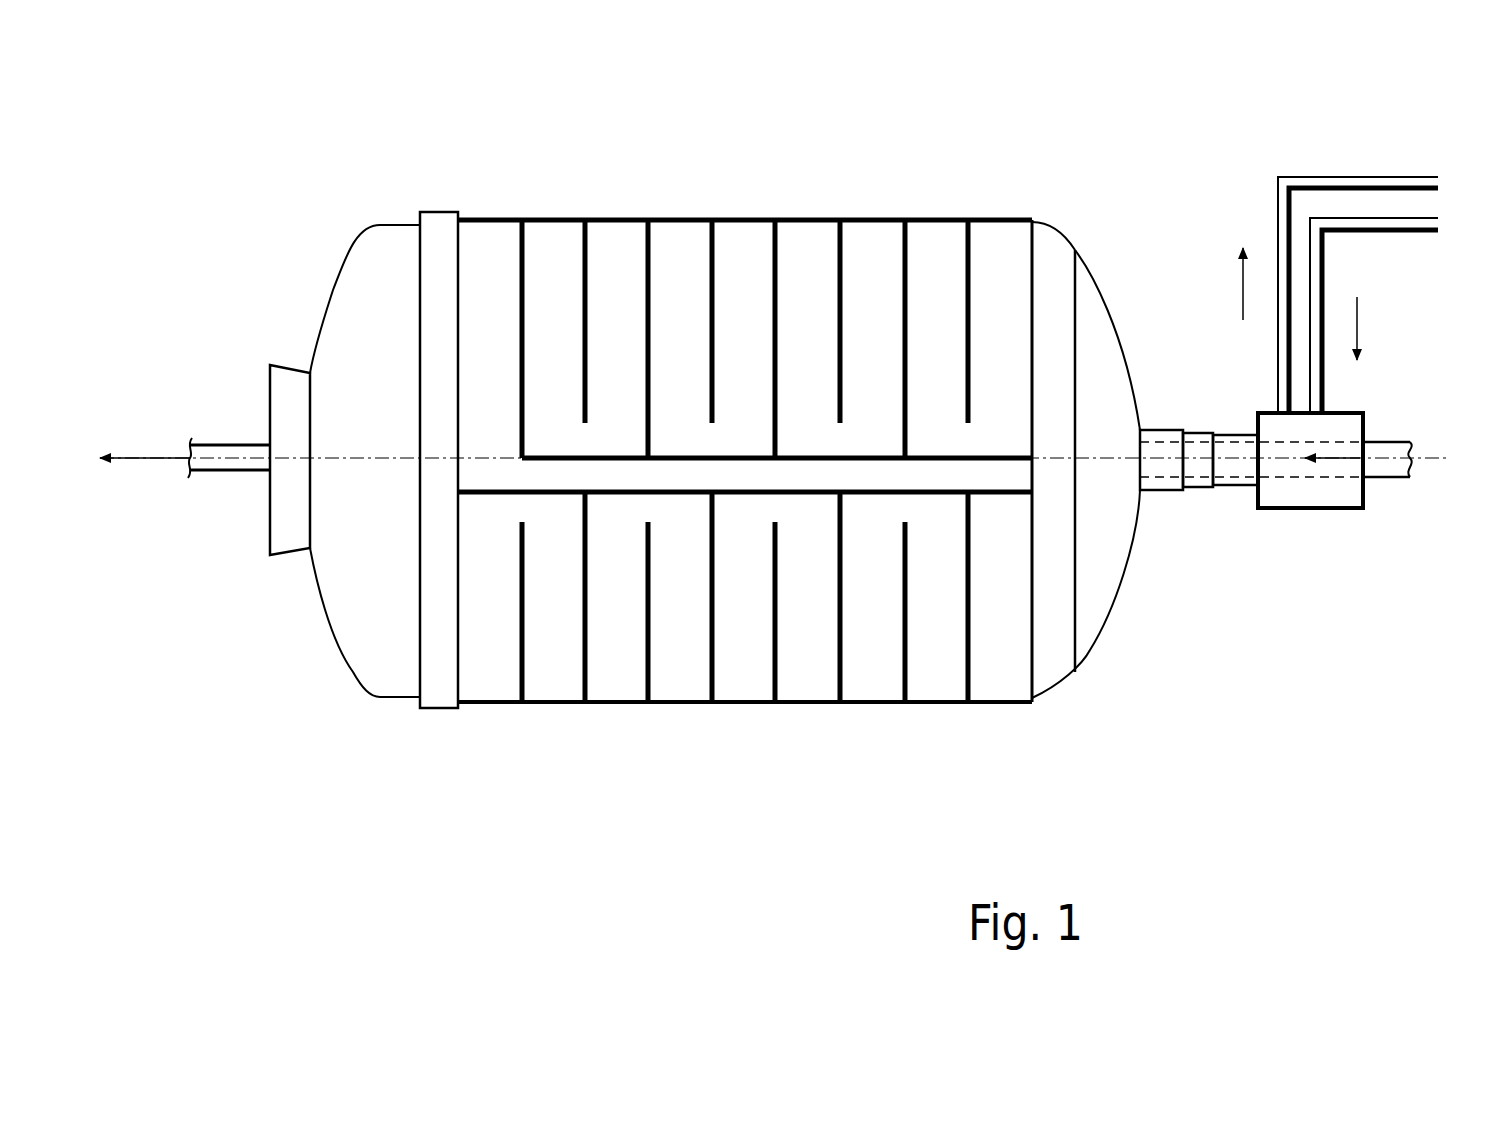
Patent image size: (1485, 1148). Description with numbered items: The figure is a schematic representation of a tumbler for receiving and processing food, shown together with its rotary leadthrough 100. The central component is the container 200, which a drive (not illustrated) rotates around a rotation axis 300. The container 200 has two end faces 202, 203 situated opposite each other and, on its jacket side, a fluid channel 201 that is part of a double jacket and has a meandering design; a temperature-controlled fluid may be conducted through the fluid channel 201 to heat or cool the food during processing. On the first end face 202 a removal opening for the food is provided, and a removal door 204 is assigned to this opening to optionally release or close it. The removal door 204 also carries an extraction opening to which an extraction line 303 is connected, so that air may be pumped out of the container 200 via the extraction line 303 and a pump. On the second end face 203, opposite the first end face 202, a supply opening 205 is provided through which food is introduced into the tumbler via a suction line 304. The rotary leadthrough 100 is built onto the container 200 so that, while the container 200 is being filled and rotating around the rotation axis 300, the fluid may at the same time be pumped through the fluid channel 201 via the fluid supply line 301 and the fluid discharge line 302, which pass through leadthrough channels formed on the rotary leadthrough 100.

The rotary leadthrough 100 is at (1244, 512).
The container 200 is at (1047, 138).
The fluid channel 201 is at (748, 250).
The first end face 202 is at (330, 285).
The second end face 203 is at (1126, 590).
The removal door 204 is at (267, 403).
The supply opening 205 is at (1124, 446).
The rotation axis 300 is at (390, 466).
The fluid supply line 301 is at (1382, 232).
The fluid discharge line 302 is at (1337, 183).
The extraction line 303 is at (228, 473).
The suction line 304 is at (1390, 476).